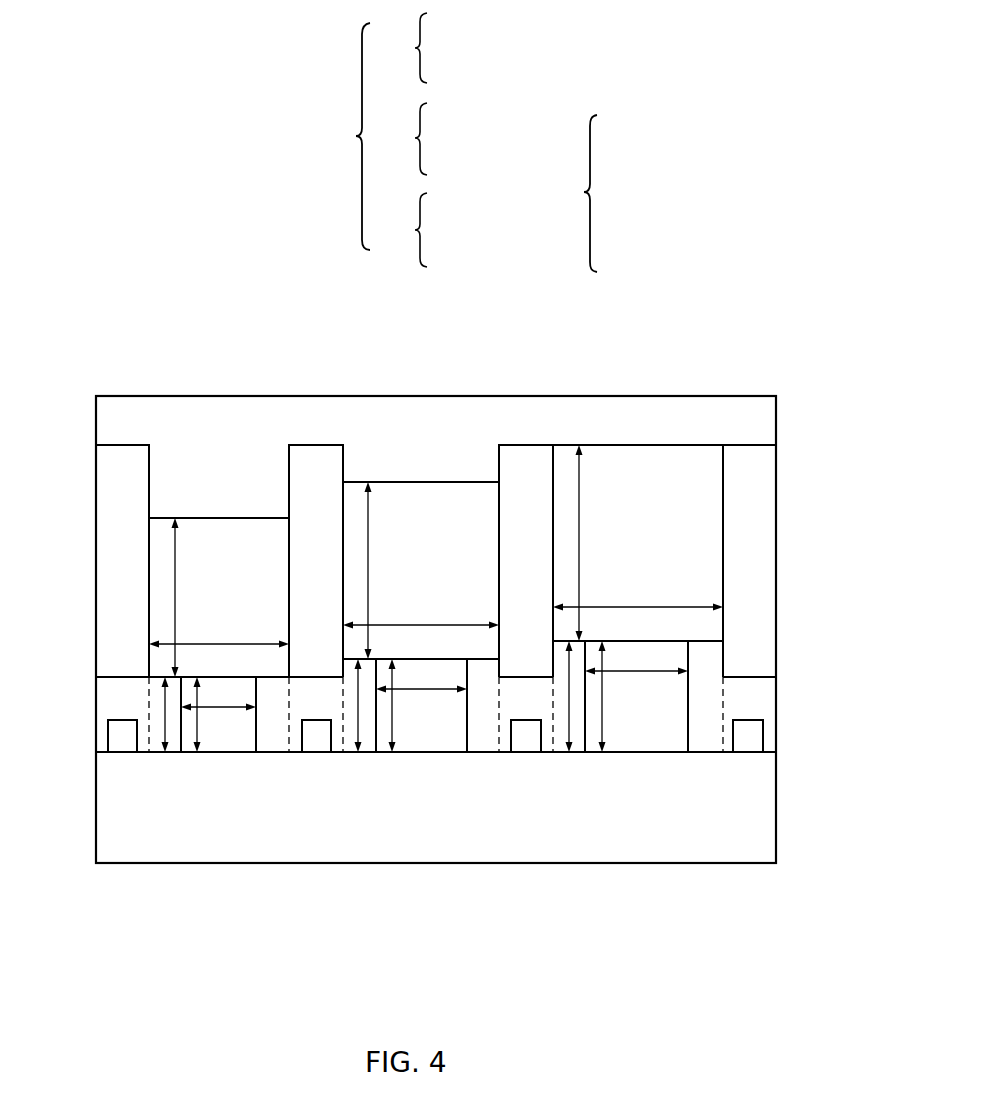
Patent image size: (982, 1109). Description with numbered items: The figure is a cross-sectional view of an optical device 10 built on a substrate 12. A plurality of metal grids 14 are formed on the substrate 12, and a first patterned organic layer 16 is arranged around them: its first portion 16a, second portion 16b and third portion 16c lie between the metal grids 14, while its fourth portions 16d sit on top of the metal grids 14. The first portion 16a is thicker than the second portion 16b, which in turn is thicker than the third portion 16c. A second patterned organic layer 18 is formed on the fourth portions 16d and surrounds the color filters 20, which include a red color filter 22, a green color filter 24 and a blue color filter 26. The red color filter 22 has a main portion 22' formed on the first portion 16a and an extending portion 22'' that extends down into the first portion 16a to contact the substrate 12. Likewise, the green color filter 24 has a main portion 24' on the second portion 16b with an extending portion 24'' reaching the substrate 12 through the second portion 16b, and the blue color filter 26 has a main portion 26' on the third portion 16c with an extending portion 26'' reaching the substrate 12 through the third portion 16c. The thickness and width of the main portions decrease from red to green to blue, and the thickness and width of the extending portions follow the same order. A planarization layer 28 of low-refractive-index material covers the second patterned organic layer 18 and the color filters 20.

The optical device 10 is at (112, 278).
The substrate 12 is at (763, 790).
The metal grids 14 is at (112, 733).
The first patterned organic layer 16 is at (600, 193).
The first portion 16a is at (710, 752).
The second portion 16b is at (486, 752).
The third portion 16c is at (273, 752).
The fourth portions 16d is at (115, 696).
The second patterned organic layer 18 is at (107, 473).
The color filters 20 is at (343, 136).
The red color filter 22 is at (426, 46).
The main portion 22' is at (638, 487).
The extending portion 22'' is at (645, 777).
The green color filter 24 is at (426, 139).
The main portion 24' is at (421, 496).
The extending portion 24'' is at (433, 786).
The blue color filter 26 is at (426, 229).
The main portion 26' is at (219, 505).
The extending portion 26'' is at (233, 795).
The planarization layer 28 is at (763, 420).